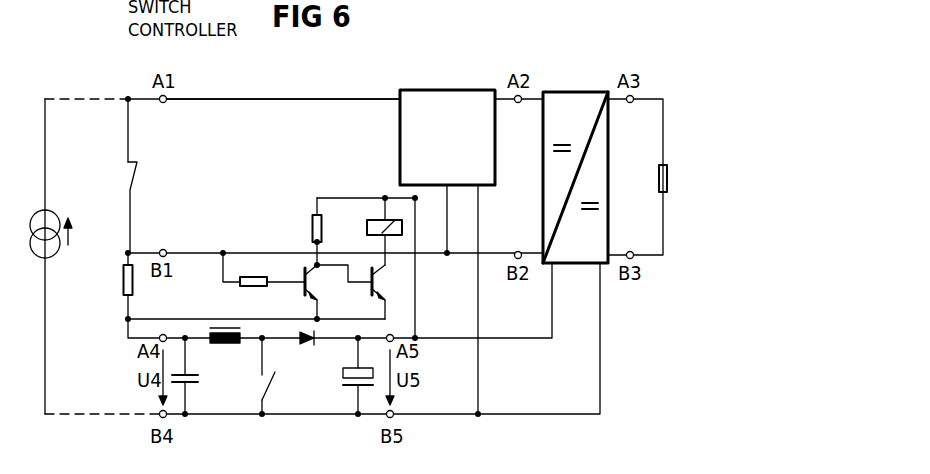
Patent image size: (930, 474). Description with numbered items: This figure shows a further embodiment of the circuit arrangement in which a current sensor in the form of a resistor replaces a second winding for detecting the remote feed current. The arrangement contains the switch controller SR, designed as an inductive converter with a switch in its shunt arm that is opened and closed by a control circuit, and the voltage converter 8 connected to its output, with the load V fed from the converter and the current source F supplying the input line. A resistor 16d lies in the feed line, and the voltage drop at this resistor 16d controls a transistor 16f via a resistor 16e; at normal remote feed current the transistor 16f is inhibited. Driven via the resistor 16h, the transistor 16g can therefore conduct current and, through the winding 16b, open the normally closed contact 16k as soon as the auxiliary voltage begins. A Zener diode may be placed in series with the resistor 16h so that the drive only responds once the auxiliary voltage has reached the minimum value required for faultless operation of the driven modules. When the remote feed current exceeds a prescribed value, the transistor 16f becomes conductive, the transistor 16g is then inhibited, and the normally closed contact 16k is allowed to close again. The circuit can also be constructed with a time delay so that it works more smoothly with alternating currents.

The voltage converter 8 is at (577, 92).
The switch controller SR is at (397, 62).
The normally closed contact 16k is at (152, 207).
The resistor 16d is at (111, 281).
The resistor 16e is at (255, 294).
The transistor 16f is at (324, 292).
The transistor 16g is at (393, 292).
The resistor 16h is at (300, 230).
The winding 16b is at (368, 232).
The current source F is at (37, 256).
The load V is at (655, 178).